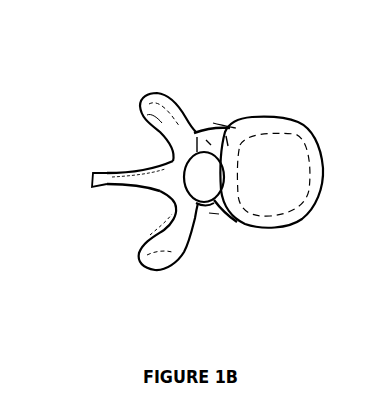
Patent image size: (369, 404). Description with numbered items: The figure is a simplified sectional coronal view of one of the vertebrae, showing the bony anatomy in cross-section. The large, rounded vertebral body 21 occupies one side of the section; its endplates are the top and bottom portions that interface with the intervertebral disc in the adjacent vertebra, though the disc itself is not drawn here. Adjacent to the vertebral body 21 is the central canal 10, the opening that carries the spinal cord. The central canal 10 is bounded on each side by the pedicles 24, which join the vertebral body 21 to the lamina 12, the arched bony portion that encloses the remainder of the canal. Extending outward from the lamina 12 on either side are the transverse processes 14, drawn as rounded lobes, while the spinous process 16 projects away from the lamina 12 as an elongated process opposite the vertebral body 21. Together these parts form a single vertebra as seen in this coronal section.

The central canal 10 is at (204, 177).
The lamina 12 is at (132, 143).
The transverse processes 14 is at (170, 93).
The spinous process 16 is at (92, 176).
The vertebral body 21 is at (271, 172).
The pedicles 24 is at (208, 128).